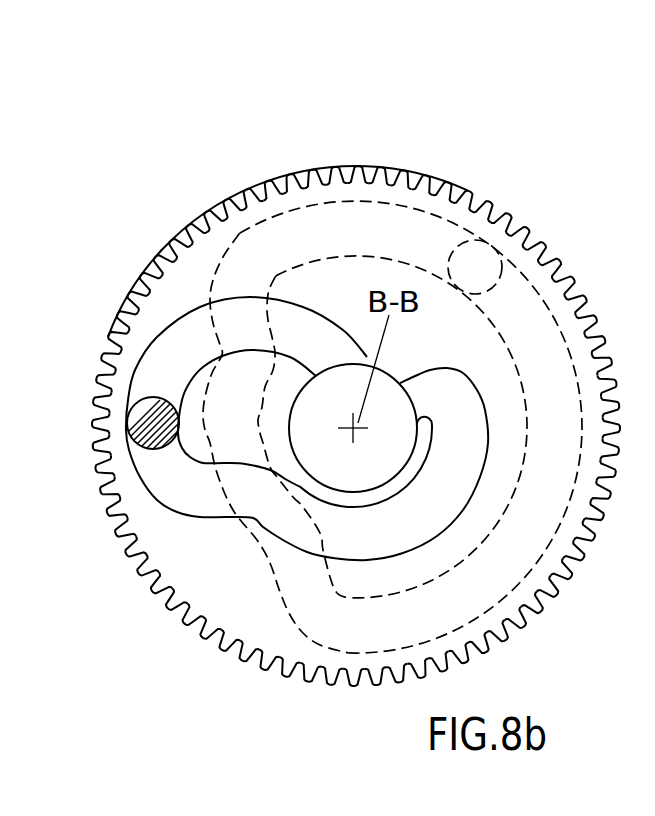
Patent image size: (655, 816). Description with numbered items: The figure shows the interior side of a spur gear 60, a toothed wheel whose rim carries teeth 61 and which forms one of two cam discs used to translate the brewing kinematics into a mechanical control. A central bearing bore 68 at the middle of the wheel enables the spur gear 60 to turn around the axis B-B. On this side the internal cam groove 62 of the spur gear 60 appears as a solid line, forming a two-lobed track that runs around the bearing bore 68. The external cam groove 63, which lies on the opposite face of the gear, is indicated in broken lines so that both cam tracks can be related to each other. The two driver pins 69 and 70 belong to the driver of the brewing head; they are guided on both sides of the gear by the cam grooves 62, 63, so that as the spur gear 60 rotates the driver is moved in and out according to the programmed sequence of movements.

The spur gear 60 is at (344, 150).
The teeth 61 is at (162, 602).
The internal cam groove 62 is at (180, 352).
The external cam groove 63 is at (398, 227).
The central bearing bore 68 is at (377, 400).
The driver pin 69 is at (477, 263).
The driver pin 70 is at (145, 425).